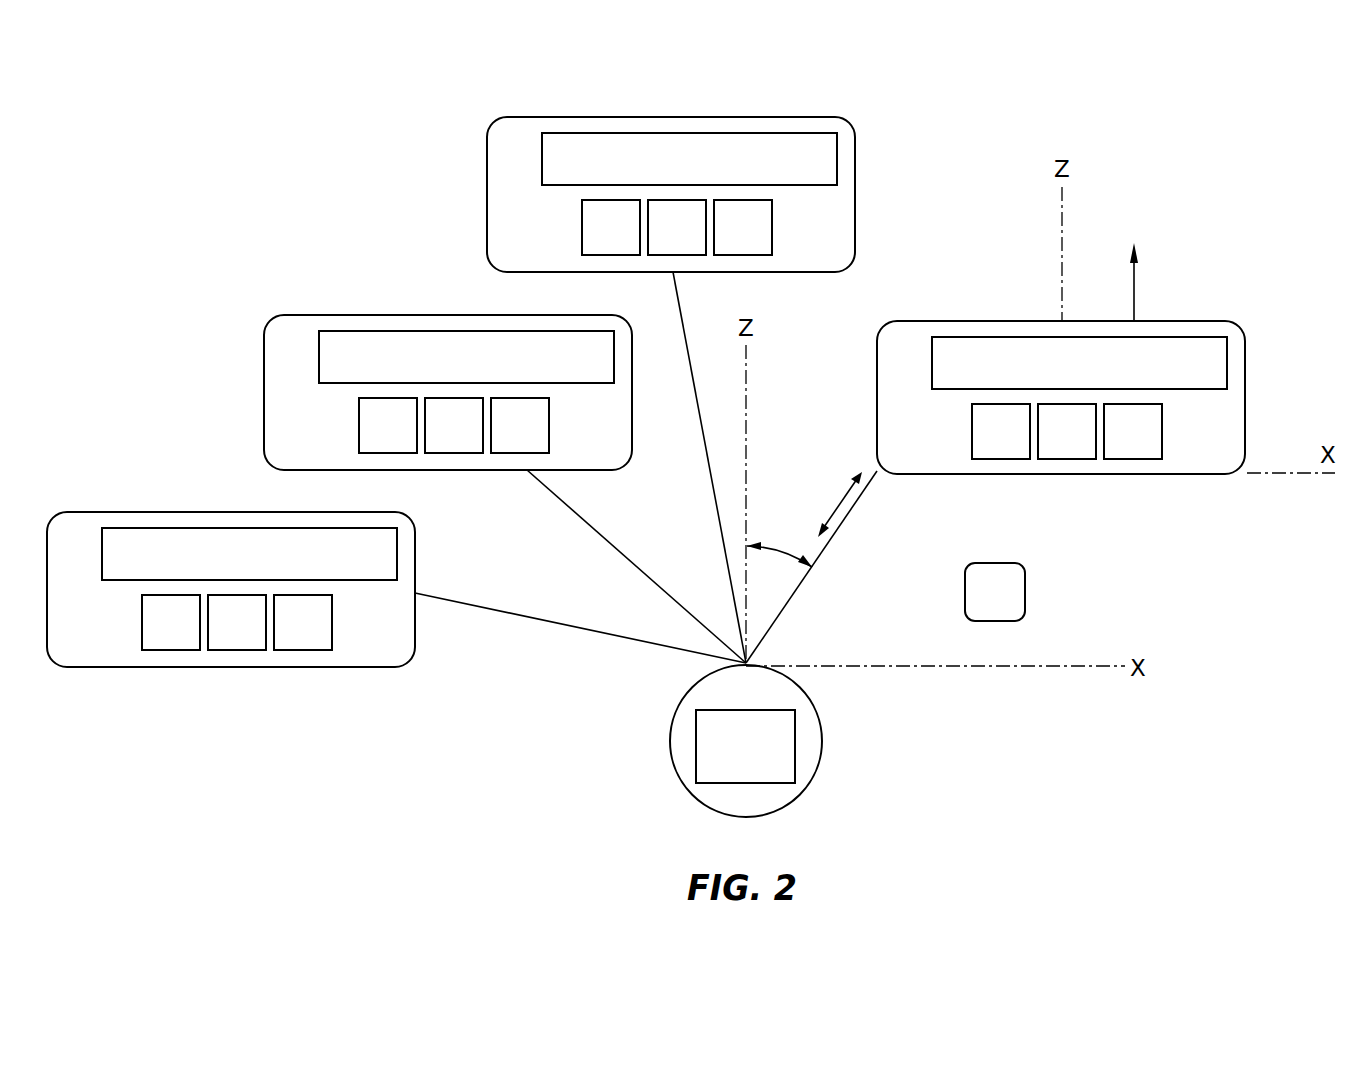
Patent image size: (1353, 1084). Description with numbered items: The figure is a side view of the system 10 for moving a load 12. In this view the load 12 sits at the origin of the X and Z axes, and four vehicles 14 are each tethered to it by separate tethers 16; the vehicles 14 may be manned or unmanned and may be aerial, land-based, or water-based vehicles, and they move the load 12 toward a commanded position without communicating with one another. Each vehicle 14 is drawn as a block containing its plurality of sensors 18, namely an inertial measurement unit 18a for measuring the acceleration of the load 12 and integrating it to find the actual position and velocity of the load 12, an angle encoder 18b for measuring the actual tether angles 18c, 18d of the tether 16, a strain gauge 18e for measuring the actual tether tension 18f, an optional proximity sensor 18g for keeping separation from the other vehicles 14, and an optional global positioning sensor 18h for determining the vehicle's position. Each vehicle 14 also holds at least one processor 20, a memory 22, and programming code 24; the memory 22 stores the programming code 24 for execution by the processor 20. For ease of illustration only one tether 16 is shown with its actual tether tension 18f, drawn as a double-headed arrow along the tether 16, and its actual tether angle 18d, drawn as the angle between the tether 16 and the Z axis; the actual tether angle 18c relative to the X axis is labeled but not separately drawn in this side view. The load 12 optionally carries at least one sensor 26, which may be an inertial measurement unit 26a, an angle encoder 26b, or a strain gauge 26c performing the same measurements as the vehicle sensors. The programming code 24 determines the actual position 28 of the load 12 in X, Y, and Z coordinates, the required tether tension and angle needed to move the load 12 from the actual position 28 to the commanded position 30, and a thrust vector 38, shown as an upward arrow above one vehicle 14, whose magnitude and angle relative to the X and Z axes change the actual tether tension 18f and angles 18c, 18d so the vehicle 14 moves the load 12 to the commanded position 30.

The system 10 is at (937, 168).
The load 12 is at (714, 741).
The vehicle 14 is at (520, 155).
The tether 16 is at (672, 467).
The sensors 18 is at (664, 356).
The inertial measurement unit 18a is at (664, 356).
The angle encoder 18b is at (664, 356).
The actual tether angle 18c is at (664, 356).
The actual tether angle 18d is at (786, 556).
The strain gauge 18e is at (664, 356).
The actual tether tension 18f is at (840, 505).
The proximity sensor 18g is at (664, 356).
The global positioning sensor 18h is at (664, 356).
The processor 20 is at (586, 425).
The memory 22 is at (652, 425).
The programming code 24 is at (718, 425).
The sensor 26 is at (745, 746).
The inertial measurement unit 26a is at (745, 746).
The angle encoder 26b is at (745, 746).
The strain gauge 26c is at (759, 701).
The actual position 28 is at (670, 747).
The commanded position 30 is at (981, 604).
The thrust vector 38 is at (1135, 290).